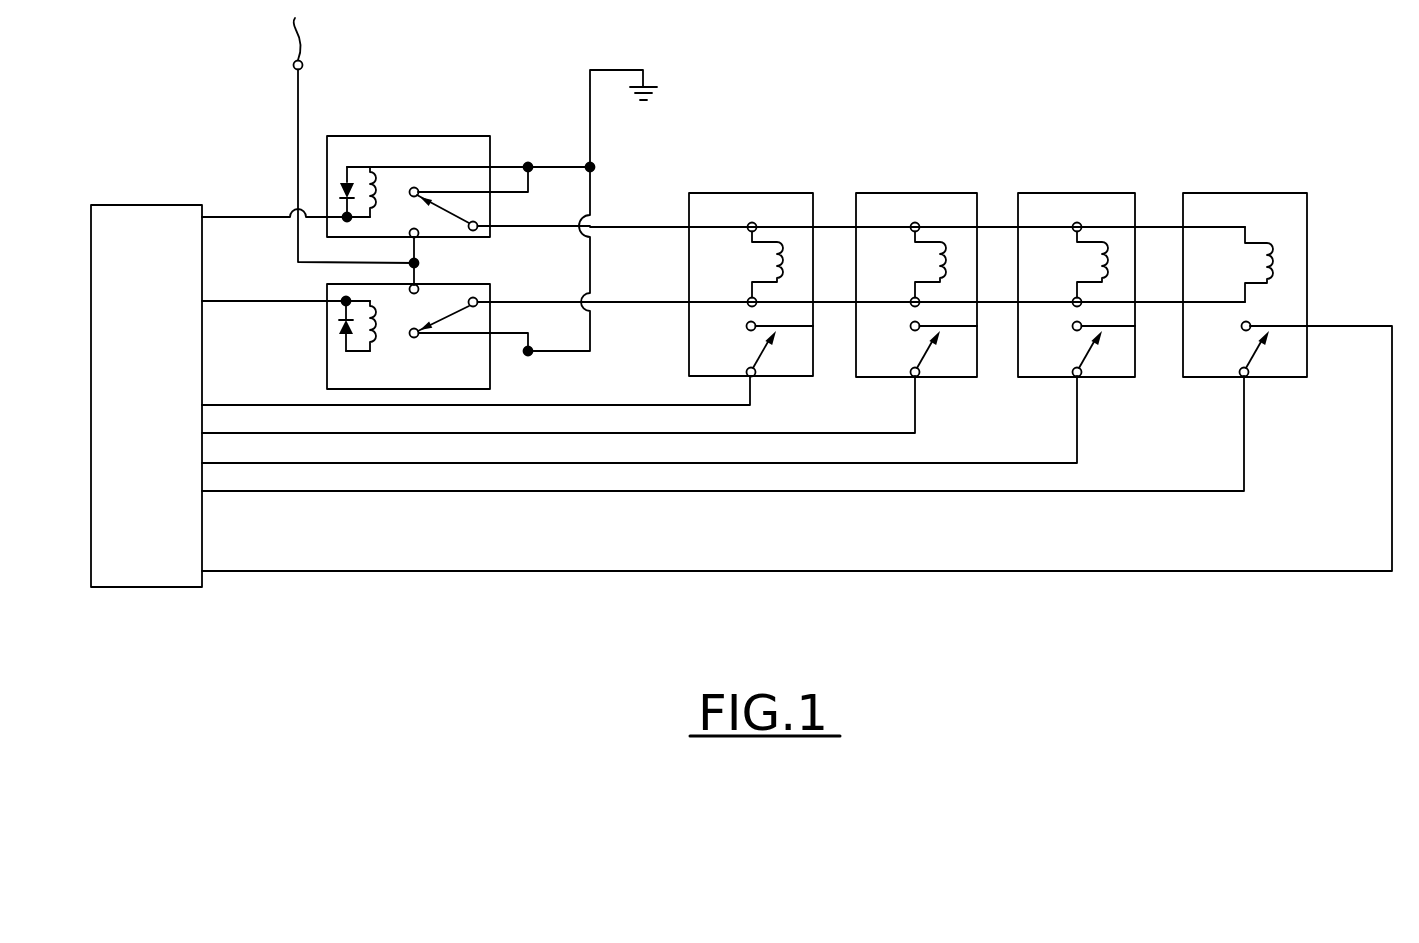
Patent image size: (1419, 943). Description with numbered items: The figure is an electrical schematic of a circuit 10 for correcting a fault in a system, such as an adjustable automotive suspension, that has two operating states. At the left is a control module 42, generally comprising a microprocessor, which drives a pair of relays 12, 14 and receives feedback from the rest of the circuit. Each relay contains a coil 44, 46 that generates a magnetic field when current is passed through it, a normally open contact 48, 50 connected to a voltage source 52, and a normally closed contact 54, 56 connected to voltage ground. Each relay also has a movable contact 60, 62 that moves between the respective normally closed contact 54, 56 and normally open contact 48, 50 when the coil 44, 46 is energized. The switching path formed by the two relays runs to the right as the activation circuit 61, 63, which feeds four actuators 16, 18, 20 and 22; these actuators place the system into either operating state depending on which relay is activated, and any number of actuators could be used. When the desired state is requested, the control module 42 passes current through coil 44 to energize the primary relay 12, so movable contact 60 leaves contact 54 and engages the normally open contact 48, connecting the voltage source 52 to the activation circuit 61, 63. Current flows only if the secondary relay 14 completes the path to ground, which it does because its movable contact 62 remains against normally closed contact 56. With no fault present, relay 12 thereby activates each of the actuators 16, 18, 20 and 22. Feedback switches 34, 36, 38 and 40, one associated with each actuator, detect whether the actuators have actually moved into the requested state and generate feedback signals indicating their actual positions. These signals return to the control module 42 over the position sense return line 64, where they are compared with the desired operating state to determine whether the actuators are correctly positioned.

The circuit 10 is at (218, 132).
The relay 12 is at (458, 182).
The relay 14 is at (416, 326).
The actuator 16 is at (757, 282).
The actuator 18 is at (922, 282).
The actuator 20 is at (1084, 282).
The actuator 22 is at (1249, 281).
The feedback switch 34 is at (757, 357).
The feedback switch 36 is at (921, 357).
The feedback switch 38 is at (1083, 357).
The feedback switch 40 is at (1250, 357).
The control module 42 is at (136, 205).
The coil 44 is at (373, 167).
The coil 46 is at (375, 351).
The normally open contact 48 is at (421, 236).
The normally open contact 50 is at (410, 287).
The voltage source 52 is at (328, 134).
The normally closed contact 54 is at (417, 187).
The normally closed contact 56 is at (420, 340).
The movable contact 60 is at (452, 210).
The activation circuit 61 is at (640, 212).
The movable contact 62 is at (453, 322).
The activation circuit 63 is at (650, 303).
The position sense return line 64 is at (1099, 573).